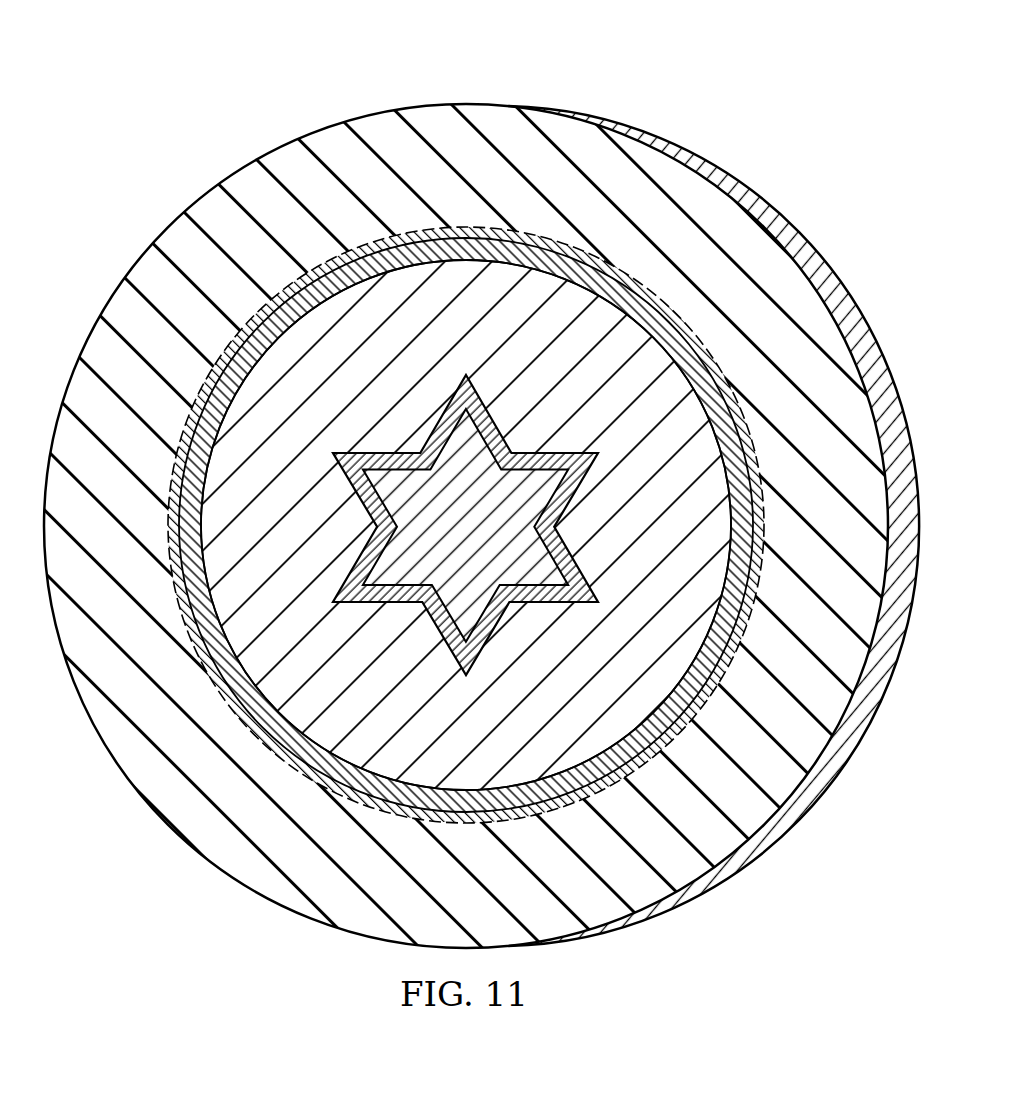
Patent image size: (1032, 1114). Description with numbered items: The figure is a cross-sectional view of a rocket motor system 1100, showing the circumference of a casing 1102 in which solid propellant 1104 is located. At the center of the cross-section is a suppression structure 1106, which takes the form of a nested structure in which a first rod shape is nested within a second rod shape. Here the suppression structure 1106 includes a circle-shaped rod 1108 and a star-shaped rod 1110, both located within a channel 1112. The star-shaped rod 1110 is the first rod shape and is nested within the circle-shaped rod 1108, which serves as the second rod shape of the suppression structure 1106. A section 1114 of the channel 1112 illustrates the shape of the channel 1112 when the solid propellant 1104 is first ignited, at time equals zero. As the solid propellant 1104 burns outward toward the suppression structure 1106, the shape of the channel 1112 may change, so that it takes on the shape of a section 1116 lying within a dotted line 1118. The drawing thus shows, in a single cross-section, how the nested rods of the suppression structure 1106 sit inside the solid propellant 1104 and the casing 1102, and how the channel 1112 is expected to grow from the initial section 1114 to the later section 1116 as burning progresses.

The rocket motor system 1100 is at (612, 66).
The casing 1102 is at (741, 194).
The solid propellant 1104 is at (331, 143).
The suppression structure 1106 is at (549, 235).
The circle-shaped rod 1108 is at (223, 488).
The star-shaped rod 1110 is at (537, 598).
The channel 1112 is at (398, 585).
The section of channel 1114 is at (491, 540).
The section of channel 1116 is at (495, 744).
The dotted line 1118 is at (389, 822).